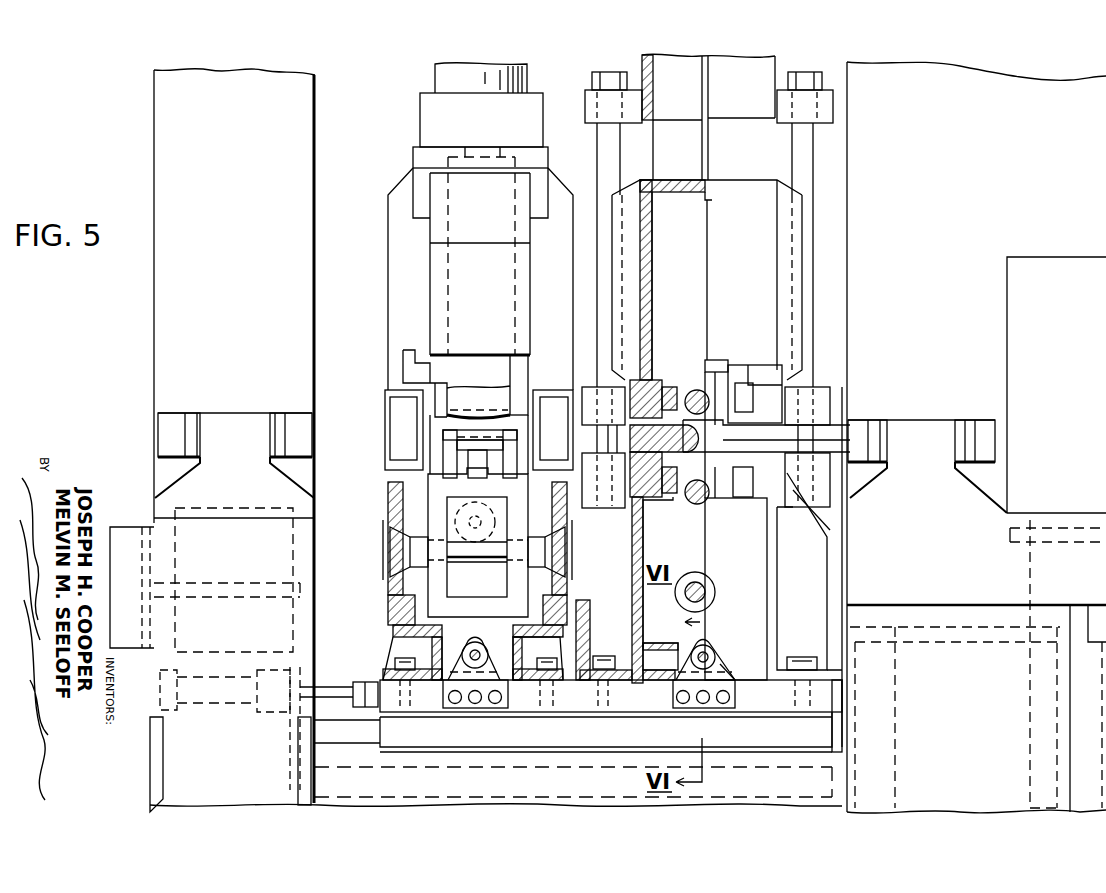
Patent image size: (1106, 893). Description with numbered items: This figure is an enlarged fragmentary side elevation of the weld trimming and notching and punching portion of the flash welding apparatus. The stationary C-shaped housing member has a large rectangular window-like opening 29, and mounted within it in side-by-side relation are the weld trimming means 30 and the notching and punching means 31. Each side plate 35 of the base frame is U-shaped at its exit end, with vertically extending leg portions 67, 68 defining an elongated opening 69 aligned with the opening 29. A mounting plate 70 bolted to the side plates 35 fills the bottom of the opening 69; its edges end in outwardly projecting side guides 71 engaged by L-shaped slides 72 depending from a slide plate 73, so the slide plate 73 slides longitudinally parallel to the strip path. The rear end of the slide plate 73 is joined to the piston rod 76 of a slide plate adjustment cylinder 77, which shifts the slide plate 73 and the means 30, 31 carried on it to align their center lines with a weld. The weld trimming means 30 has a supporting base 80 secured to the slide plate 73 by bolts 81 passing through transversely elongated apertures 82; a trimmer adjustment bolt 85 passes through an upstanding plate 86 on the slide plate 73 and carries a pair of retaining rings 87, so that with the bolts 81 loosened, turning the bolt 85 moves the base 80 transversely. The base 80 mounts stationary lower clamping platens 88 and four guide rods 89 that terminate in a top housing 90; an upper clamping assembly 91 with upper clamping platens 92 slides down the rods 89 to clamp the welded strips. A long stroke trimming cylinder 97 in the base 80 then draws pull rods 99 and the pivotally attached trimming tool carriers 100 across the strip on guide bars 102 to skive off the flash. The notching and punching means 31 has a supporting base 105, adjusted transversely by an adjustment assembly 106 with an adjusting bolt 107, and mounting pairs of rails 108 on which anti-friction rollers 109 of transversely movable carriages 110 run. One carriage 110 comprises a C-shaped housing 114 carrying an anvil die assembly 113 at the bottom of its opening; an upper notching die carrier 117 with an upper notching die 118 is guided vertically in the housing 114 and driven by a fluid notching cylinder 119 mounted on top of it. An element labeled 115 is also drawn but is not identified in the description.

The window-like opening 29 is at (355, 78).
The weld trimming means 30 is at (810, 63).
The notching and punching means 31 is at (530, 53).
The side plate 35 is at (178, 756).
The leg portion 67 is at (195, 545).
The leg portion 68 is at (988, 512).
The elongated opening 69 is at (828, 494).
The mounting plate 70 is at (365, 745).
The side guide 71 is at (318, 752).
The L-shaped slide 72 is at (498, 750).
The slide plate 73 is at (388, 692).
The piston rod 76 is at (345, 690).
The slide plate adjustment cylinder 77 is at (208, 682).
The supporting base 80 is at (842, 564).
The bolt 81 is at (602, 656).
The transversely elongated aperture 82 is at (592, 708).
The trimmer adjustment bolt 85 is at (712, 652).
The plate 86 is at (728, 668).
The retaining ring 87 is at (690, 650).
The lower clamping platen 88 is at (712, 420).
The guide rod 89 is at (598, 150).
The top housing 90 is at (643, 58).
The upper clamping assembly 91 is at (690, 184).
The upper clamping platen 92 is at (800, 422).
The trimming cylinder 97 is at (695, 582).
The pull rod 99 is at (697, 398).
The trimming tool carrier 100 is at (712, 360).
The guide bar 102 is at (745, 395).
The supporting base 105 is at (400, 645).
The notching and punching adjustment assembly 106 is at (477, 642).
The adjusting bolt 107 is at (470, 668).
The rail 108 is at (395, 500).
The anti-friction roller 109 is at (395, 543).
The carriage 110 is at (445, 482).
The anvil die assembly 113 is at (455, 437).
The C-shaped housing 114 is at (388, 255).
The cylinder wall 115 is at (430, 386).
The upper notching die carrier 117 is at (492, 292).
The upper notching die 118 is at (452, 408).
The fluid notching cylinder 119 is at (432, 129).